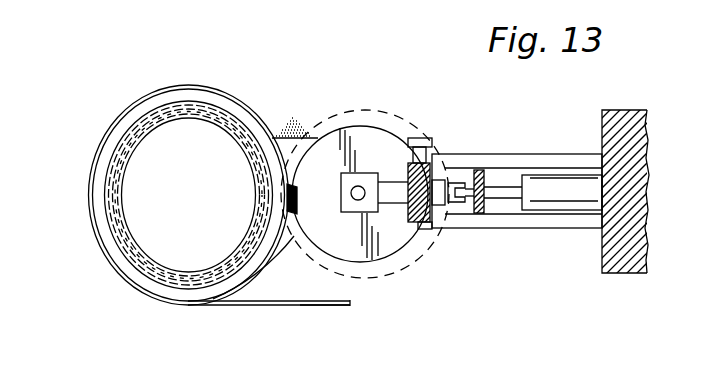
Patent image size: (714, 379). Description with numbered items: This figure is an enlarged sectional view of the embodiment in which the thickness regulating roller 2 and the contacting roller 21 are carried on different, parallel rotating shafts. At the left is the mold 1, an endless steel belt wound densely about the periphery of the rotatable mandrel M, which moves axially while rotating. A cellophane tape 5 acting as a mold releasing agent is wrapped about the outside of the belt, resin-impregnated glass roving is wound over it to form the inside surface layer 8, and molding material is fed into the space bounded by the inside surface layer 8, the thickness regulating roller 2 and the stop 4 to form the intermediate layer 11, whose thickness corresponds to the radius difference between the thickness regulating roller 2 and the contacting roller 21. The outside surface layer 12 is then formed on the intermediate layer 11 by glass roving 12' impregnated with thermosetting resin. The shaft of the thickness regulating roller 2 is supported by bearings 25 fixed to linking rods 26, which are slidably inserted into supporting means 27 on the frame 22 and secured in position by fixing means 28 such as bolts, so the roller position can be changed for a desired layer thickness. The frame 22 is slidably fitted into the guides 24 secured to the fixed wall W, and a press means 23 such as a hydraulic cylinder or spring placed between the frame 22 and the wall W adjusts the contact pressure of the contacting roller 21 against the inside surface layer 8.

The mold 1 is at (103, 196).
The thickness regulating roller 2 is at (390, 145).
The stop 4 is at (300, 134).
The cellophane tape 5 is at (112, 163).
The inside surface layer 8 is at (127, 133).
The intermediate layer 11 is at (150, 112).
The outside surface layer 12 is at (220, 175).
The glass roving 12' is at (332, 324).
The contacting roller 21 is at (399, 280).
The frame 22 is at (476, 171).
The press means 23 is at (570, 186).
The guide 24 is at (517, 160).
The bearing 25 is at (348, 201).
The linking rod 26 is at (441, 203).
The supporting means 27 is at (409, 220).
The fixing means 28 is at (430, 139).
The mandrel M is at (125, 163).
The fixed wall W is at (640, 208).